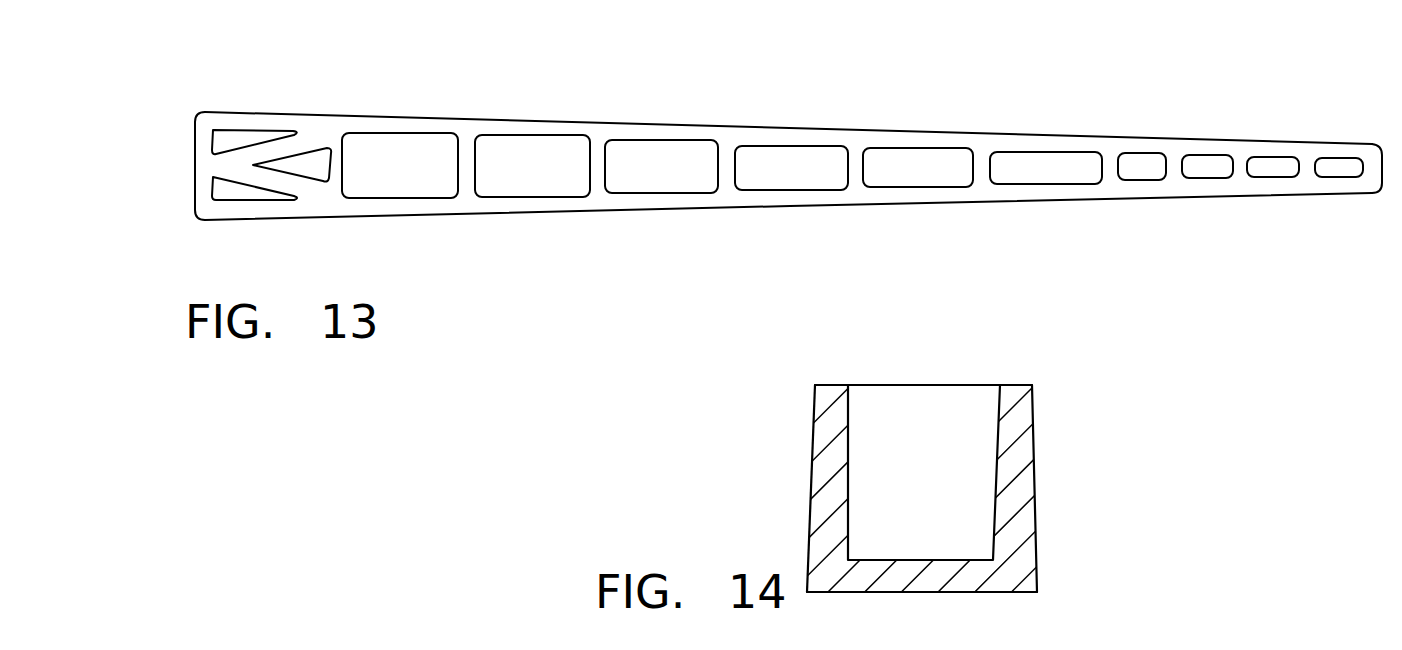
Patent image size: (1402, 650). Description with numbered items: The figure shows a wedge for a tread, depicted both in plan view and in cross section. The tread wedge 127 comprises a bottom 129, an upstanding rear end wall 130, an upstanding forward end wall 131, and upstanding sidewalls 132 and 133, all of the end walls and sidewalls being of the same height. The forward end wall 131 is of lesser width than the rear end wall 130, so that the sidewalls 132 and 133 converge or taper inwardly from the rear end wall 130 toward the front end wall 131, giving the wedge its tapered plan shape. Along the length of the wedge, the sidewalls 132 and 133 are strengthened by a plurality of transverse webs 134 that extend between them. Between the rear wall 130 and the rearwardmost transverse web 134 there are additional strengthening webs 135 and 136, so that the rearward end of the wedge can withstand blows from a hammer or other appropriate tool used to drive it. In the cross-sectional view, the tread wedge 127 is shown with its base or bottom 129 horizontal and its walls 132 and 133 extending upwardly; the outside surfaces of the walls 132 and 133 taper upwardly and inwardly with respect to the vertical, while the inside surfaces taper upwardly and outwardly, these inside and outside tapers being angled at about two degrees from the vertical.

In FIG. 13, the tread wedge 127 is at (1053, 202).
In FIG. 14, the tread wedge 127 is at (918, 402).
In FIG. 13, the bottom 129 is at (778, 178).
In FIG. 14, the bottom 129 is at (895, 568).
In FIG. 13, the upstanding rear end wall 130 is at (194, 160).
In FIG. 13, the upstanding forward end wall 131 is at (1385, 172).
In FIG. 13, the upstanding sidewall 132 is at (908, 135).
In FIG. 14, the upstanding sidewall 132 is at (822, 460).
In FIG. 13, the upstanding sidewall 133 is at (900, 203).
In FIG. 14, the upstanding sidewall 133 is at (1022, 445).
In FIG. 13, the transverse web 134 is at (338, 162).
In FIG. 14, the transverse web 134 is at (945, 479).
In FIG. 13, the strengthening web 135 is at (279, 147).
In FIG. 13, the strengthening web 136 is at (271, 185).